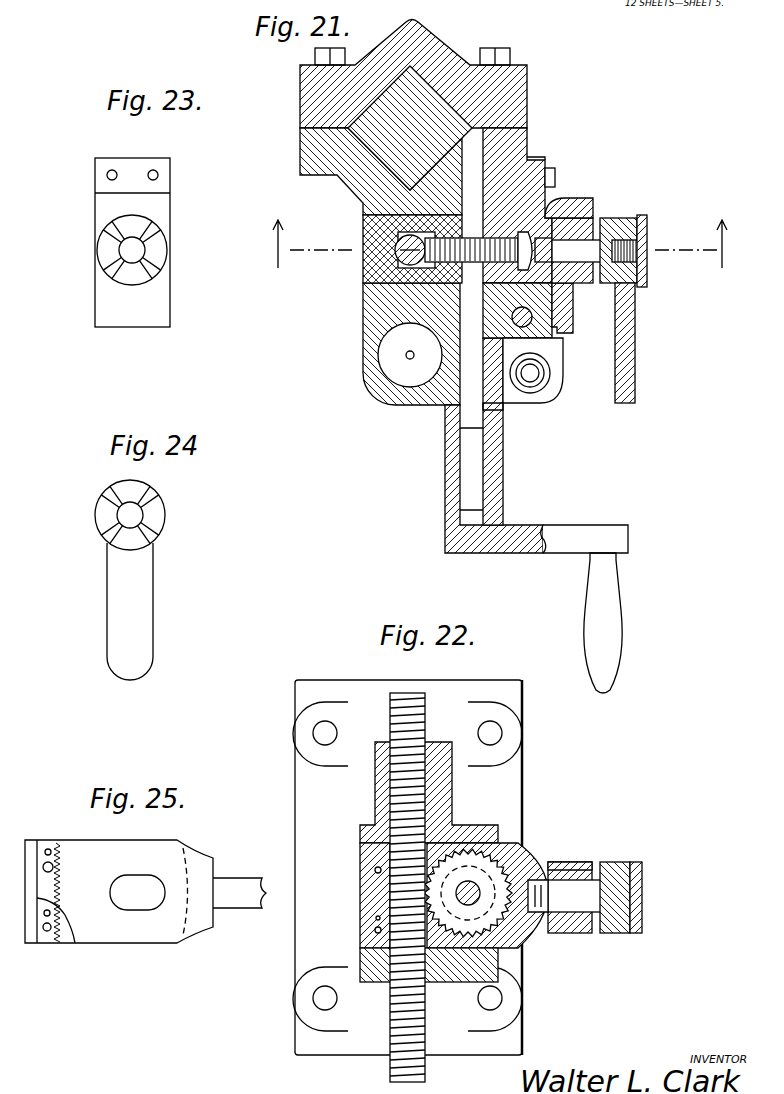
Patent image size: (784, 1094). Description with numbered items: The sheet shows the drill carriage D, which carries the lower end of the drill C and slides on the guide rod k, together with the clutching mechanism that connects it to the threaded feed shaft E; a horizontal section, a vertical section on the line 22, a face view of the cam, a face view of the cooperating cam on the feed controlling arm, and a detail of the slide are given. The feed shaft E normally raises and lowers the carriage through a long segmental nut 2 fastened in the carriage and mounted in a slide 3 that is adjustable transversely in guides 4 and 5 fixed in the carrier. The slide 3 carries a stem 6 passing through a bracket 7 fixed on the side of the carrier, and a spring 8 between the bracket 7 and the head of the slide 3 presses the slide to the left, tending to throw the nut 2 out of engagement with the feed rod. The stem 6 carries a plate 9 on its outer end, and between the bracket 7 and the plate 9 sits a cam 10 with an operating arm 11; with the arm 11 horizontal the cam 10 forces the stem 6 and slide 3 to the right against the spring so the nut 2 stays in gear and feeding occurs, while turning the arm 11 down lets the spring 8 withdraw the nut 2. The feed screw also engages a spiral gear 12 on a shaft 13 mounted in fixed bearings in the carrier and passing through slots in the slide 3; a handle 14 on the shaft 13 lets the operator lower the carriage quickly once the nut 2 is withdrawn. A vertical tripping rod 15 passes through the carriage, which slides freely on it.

In FIG. 21, the guide rod k is at (377, 117).
In FIG. 21, the carriage D is at (464, 287).
In FIG. 22, the carriage D is at (407, 867).
In FIG. 21, the threaded feed shaft E is at (397, 247).
In FIG. 22, the threaded feed shaft E is at (423, 720).
In FIG. 21, the segmental nut 2 is at (363, 257).
In FIG. 22, the segmental nut 2 is at (360, 892).
In FIG. 25, the segmental nut 2 is at (48, 943).
In FIG. 21, the slide 3 is at (363, 294).
In FIG. 22, the slide 3 is at (532, 933).
In FIG. 25, the slide 3 is at (118, 930).
In FIG. 22, the guide 4 is at (467, 827).
In FIG. 22, the guide 5 is at (467, 967).
In FIG. 21, the stem 6 is at (578, 251).
In FIG. 22, the stem 6 is at (579, 896).
In FIG. 25, the stem 6 is at (247, 898).
In FIG. 21, the bracket 7 is at (566, 210).
In FIG. 22, the bracket 7 is at (568, 860).
In FIG. 23, the bracket 7 is at (107, 234).
In FIG. 21, the spring 8 is at (585, 218).
In FIG. 22, the spring 8 is at (577, 862).
In FIG. 21, the plate 9 is at (647, 224).
In FIG. 22, the plate 9 is at (642, 868).
In FIG. 21, the cam 10 is at (617, 218).
In FIG. 22, the cam 10 is at (613, 862).
In FIG. 24, the cam 10 is at (157, 510).
In FIG. 21, the operating arm 11 is at (635, 331).
In FIG. 24, the operating arm 11 is at (138, 615).
In FIG. 21, the spiral gear 12 is at (527, 157).
In FIG. 22, the spiral gear 12 is at (468, 893).
In FIG. 21, the shaft 13 is at (483, 410).
In FIG. 22, the shaft 13 is at (470, 905).
In FIG. 21, the handle 14 is at (597, 591).
In FIG. 21, the tripping rod 15 is at (535, 331).
In FIG. 21, the drill C is at (408, 358).
In FIG. 21, the section line 22 is at (504, 244).